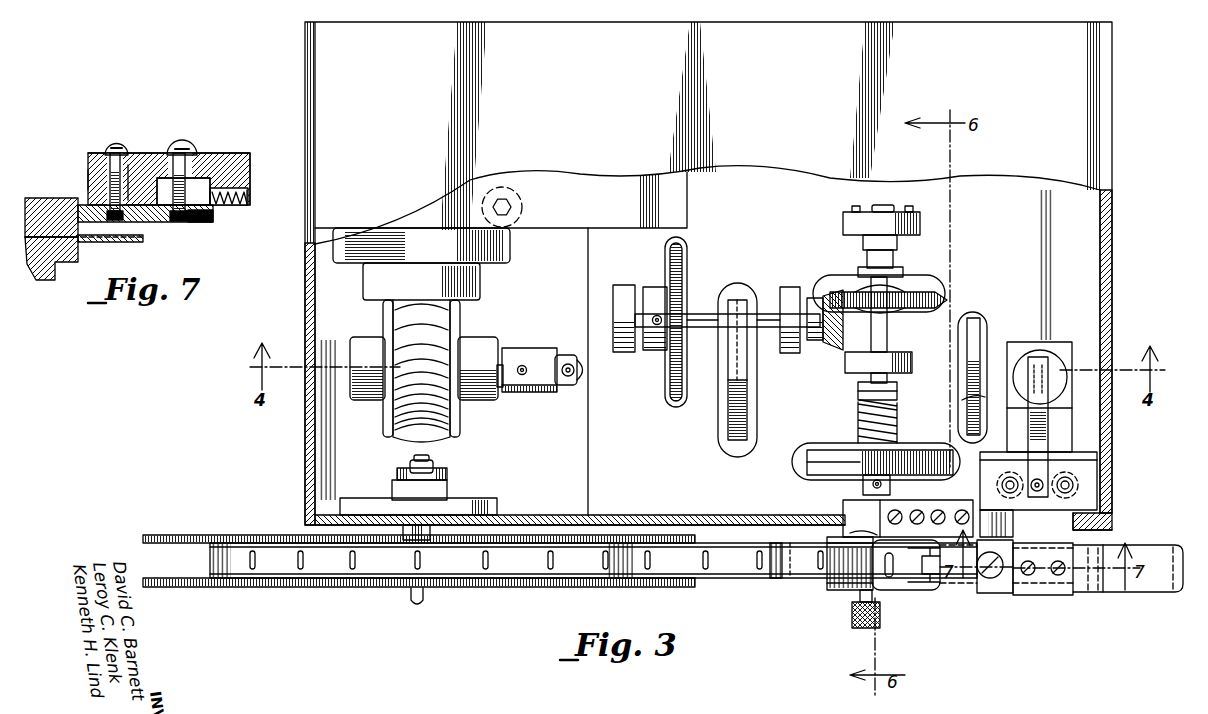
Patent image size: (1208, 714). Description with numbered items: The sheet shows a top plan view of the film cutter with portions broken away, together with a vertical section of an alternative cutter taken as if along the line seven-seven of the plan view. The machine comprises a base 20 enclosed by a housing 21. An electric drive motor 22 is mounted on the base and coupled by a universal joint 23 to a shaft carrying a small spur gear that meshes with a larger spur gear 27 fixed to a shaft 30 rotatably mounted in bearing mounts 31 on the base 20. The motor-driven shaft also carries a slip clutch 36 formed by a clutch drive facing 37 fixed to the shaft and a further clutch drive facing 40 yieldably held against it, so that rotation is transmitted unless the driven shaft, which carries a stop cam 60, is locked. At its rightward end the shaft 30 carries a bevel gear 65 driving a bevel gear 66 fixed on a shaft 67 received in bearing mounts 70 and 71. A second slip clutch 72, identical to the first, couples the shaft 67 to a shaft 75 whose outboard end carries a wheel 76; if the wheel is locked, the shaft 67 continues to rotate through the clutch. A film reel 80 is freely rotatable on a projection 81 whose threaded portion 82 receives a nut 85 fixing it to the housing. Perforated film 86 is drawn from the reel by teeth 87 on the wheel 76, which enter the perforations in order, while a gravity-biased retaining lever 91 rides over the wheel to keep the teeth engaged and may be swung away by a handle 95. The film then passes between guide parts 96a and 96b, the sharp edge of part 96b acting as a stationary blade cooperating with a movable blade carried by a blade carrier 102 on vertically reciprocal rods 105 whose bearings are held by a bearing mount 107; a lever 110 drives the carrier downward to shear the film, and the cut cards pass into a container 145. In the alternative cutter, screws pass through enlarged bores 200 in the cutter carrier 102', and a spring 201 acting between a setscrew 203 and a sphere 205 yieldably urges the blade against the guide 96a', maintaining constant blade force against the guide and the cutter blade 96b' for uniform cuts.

In FIG. 3, the base 20 is at (638, 444).
In FIG. 3, the housing 21 is at (305, 478).
In FIG. 3, the drive motor 22 is at (491, 296).
In FIG. 3, the universal joint 23 is at (548, 384).
In FIG. 3, the larger spur gear 27 is at (648, 358).
In FIG. 3, the shaft 30 is at (694, 316).
In FIG. 3, the bearing mounts 31 is at (624, 288).
In FIG. 3, the slip clutch 36 is at (750, 298).
In FIG. 3, the clutch drive facing 37 is at (722, 443).
In FIG. 3, the clutch drive facing 40 is at (750, 432).
In FIG. 3, the stop cam 60 is at (975, 330).
In FIG. 3, the bevel gear 65 is at (816, 344).
In FIG. 3, the bevel gear 66 is at (905, 283).
In FIG. 3, the shaft 67 is at (887, 338).
In FIG. 3, the bearing mount 70 is at (855, 220).
In FIG. 3, the bearing mount 71 is at (852, 370).
In FIG. 3, the slip clutch 72 is at (795, 470).
In FIG. 3, the shaft 75 is at (845, 496).
In FIG. 3, the wheel 76 is at (772, 598).
In FIG. 3, the film reel 80 is at (299, 597).
In FIG. 3, the projection 81 is at (432, 520).
In FIG. 3, the threaded portion 82 is at (412, 462).
In FIG. 3, the nut 85 is at (447, 476).
In FIG. 3, the film 86 is at (507, 570).
In FIG. 3, the teeth 87 is at (815, 572).
In FIG. 3, the retaining lever 91 is at (847, 600).
In FIG. 3, the handle 95 is at (860, 628).
In FIG. 3, the film guide part 96a is at (976, 585).
In FIG. 3, the film guide part 96b is at (906, 585).
In FIG. 3, the blade carrier 102 is at (1043, 587).
In FIG. 3, the rods 105 is at (1078, 486).
In FIG. 3, the bearing mount 107 is at (1090, 516).
In FIG. 3, the lever 110 is at (1048, 412).
In FIG. 3, the container 145 is at (1102, 598).
In FIG. 7, the guide 96a' is at (82, 206).
In FIG. 7, the cutter blade 96b' is at (48, 275).
In FIG. 7, the cutter carrier 102' is at (176, 156).
In FIG. 7, the enlarged bores 200 is at (110, 170).
In FIG. 7, the spring 201 is at (250, 172).
In FIG. 7, the setscrew 203 is at (248, 204).
In FIG. 7, the sphere 205 is at (213, 218).